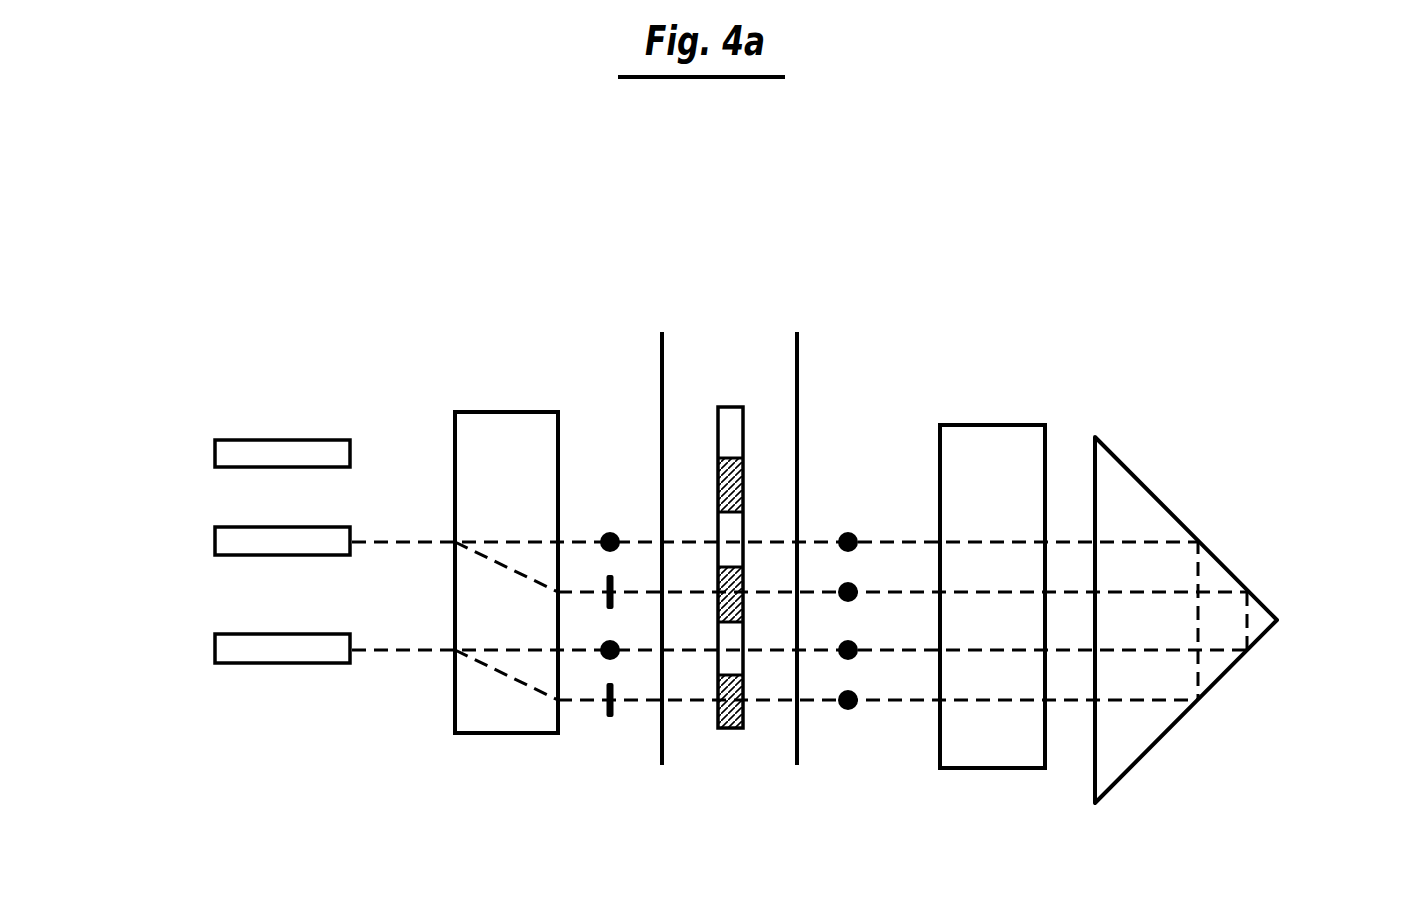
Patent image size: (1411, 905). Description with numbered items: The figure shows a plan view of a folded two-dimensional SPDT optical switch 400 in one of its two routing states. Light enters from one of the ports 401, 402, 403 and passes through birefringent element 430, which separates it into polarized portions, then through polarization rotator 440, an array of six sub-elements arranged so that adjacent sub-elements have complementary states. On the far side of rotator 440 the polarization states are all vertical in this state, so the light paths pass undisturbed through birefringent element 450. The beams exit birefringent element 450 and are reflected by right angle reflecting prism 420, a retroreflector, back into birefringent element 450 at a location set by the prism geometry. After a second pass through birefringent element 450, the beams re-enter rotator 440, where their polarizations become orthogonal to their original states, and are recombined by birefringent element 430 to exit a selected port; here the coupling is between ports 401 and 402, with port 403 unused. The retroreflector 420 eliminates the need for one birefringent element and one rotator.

The folded two-dimensional SPDT switch 400 is at (1142, 297).
The port 401 is at (260, 663).
The port 402 is at (251, 527).
The port 403 is at (280, 440).
The right angle reflecting prism 420 is at (1170, 508).
The birefringent element 430 is at (507, 412).
The polarization rotator 440 is at (729, 407).
The birefringent element 450 is at (1003, 425).